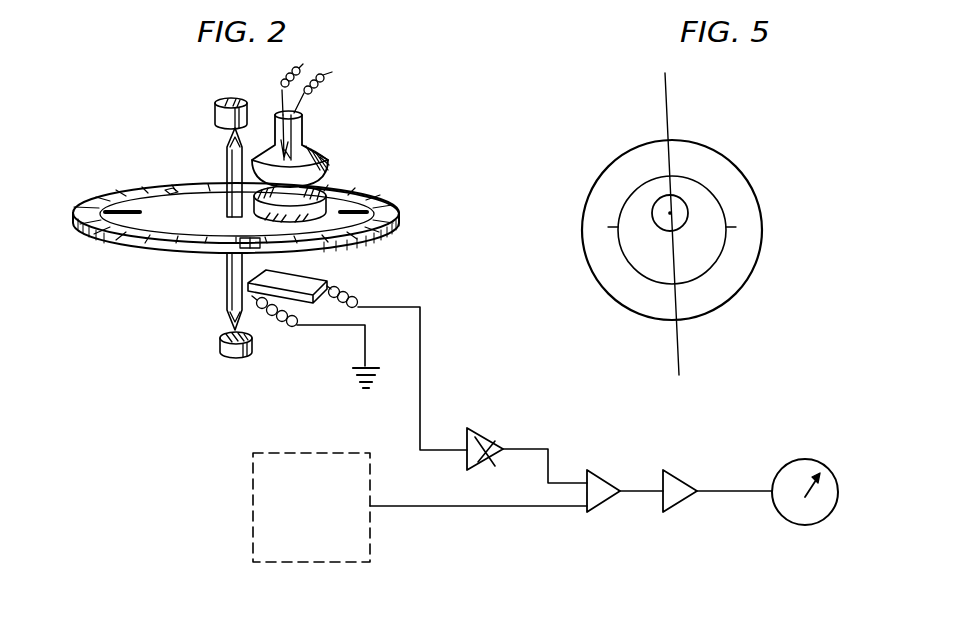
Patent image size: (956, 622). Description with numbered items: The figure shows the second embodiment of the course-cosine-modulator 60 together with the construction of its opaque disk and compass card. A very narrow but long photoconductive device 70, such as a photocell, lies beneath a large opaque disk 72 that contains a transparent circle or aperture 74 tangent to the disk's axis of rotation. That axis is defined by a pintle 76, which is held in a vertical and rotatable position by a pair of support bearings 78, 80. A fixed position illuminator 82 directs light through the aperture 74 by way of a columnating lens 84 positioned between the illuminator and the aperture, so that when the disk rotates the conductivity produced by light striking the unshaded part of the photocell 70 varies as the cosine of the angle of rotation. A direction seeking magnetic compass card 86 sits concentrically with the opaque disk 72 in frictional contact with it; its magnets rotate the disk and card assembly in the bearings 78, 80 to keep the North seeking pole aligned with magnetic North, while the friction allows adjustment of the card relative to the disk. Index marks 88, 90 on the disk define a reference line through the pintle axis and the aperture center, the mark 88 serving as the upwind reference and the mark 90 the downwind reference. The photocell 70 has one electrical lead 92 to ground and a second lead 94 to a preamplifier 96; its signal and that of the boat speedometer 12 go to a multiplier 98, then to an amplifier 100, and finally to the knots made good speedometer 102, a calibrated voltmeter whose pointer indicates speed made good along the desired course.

In FIG. 2, the boat speedometer 12 is at (253, 528).
In FIG. 2, the course-cosine-modulator 60 is at (118, 93).
In FIG. 2, the photoconductive device 70 is at (312, 276).
In FIG. 2, the opaque disk 72 is at (182, 210).
In FIG. 5, the opaque disk 72 is at (725, 250).
In FIG. 2, the transparent circle aperture 74 is at (240, 218).
In FIG. 5, the transparent circle aperture 74 is at (680, 197).
In FIG. 2, the pintle 76 is at (226, 305).
In FIG. 2, the support bearing 78 is at (229, 98).
In FIG. 2, the support bearing 80 is at (236, 360).
In FIG. 2, the fixed position illuminator 82 is at (318, 152).
In FIG. 2, the columnating lens 84 is at (322, 198).
In FIG. 2, the magnetic compass card 86 is at (400, 217).
In FIG. 5, the magnetic compass card 86 is at (757, 195).
In FIG. 2, the index mark 88 is at (122, 210).
In FIG. 2, the index mark 90 is at (343, 210).
In FIG. 2, the electrical lead 92 is at (296, 328).
In FIG. 2, the second lead 94 is at (394, 306).
In FIG. 2, the preamplifier 96 is at (485, 466).
In FIG. 2, the multiplier 98 is at (604, 488).
In FIG. 2, the amplifier 100 is at (678, 482).
In FIG. 2, the "knots made good" speedometer 102 is at (840, 480).